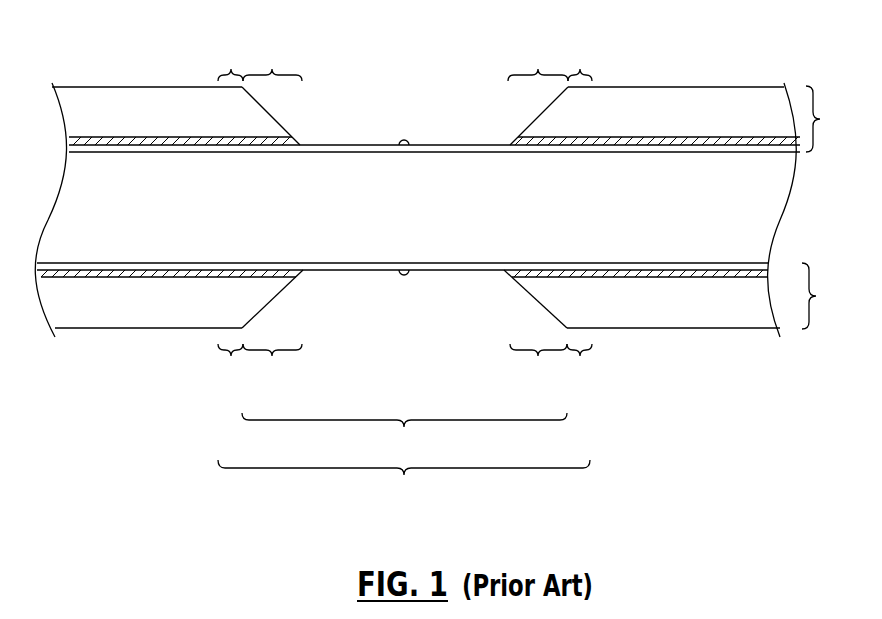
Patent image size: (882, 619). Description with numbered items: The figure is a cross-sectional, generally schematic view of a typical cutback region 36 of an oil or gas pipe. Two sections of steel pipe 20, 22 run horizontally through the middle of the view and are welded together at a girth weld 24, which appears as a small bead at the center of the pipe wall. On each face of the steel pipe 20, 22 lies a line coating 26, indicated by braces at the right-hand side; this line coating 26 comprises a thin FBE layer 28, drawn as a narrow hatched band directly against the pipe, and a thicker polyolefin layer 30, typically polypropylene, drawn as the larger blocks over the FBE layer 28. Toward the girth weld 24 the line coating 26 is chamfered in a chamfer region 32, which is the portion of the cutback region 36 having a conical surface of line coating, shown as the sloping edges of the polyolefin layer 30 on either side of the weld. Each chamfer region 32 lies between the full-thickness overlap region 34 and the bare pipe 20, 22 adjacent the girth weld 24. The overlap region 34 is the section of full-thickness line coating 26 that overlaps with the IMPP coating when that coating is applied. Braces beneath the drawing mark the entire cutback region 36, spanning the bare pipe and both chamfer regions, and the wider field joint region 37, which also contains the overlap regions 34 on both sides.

The steel pipe section 20 is at (462, 145).
The steel pipe section 22 is at (357, 145).
The girth weld 24 is at (404, 277).
The line coating 26 is at (831, 207).
The FBE layer 28 is at (170, 140).
The polyolefin layer 30 is at (142, 94).
The chamfer region 32 is at (405, 214).
The overlap region 34 is at (404, 214).
The cutback region 36 is at (404, 437).
The field joint region 37 is at (404, 485).